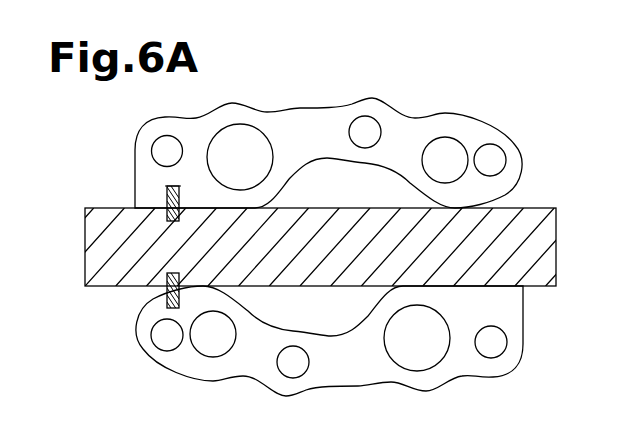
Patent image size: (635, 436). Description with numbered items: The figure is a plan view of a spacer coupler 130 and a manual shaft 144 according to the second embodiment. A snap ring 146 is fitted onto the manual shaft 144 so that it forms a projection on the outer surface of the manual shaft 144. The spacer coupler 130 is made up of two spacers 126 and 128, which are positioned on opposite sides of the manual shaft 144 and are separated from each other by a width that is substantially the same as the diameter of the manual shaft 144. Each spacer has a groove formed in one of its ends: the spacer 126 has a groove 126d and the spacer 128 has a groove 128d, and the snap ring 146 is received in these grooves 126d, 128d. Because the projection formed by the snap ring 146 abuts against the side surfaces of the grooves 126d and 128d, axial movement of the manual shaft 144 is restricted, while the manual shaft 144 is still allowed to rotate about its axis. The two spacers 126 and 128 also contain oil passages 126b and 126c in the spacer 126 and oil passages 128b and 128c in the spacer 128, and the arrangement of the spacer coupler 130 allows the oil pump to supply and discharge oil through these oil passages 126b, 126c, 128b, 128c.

The spacer coupler 130 is at (546, 113).
The spacer 126 is at (291, 133).
The oil passage 126b is at (240, 142).
The oil passage 126c is at (445, 150).
The groove 126d is at (171, 184).
The snap ring 146 is at (167, 196).
The manual shaft 144 is at (535, 288).
The spacer 128 is at (310, 361).
The oil passage 128b is at (417, 355).
The oil passage 128c is at (213, 347).
The groove 128d is at (174, 311).